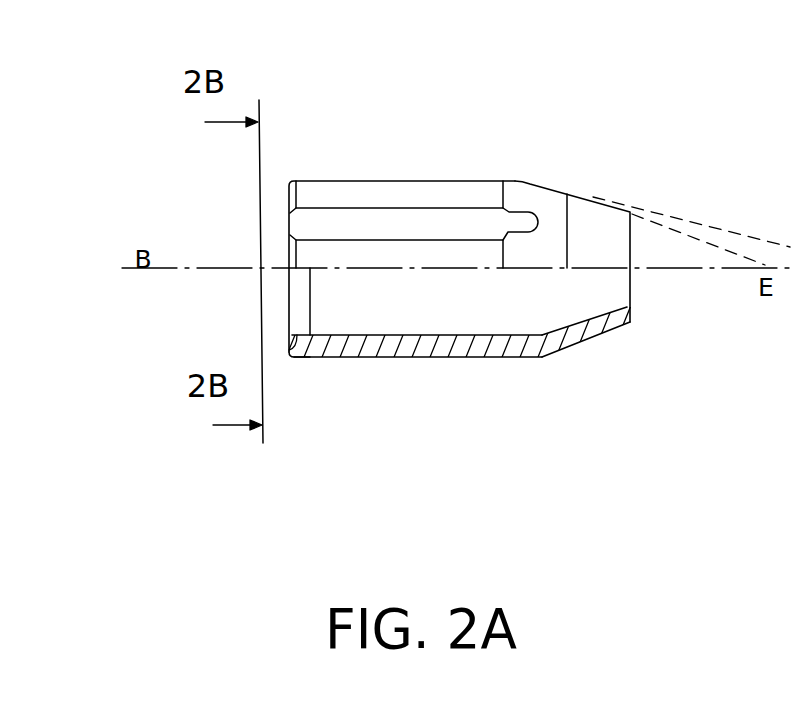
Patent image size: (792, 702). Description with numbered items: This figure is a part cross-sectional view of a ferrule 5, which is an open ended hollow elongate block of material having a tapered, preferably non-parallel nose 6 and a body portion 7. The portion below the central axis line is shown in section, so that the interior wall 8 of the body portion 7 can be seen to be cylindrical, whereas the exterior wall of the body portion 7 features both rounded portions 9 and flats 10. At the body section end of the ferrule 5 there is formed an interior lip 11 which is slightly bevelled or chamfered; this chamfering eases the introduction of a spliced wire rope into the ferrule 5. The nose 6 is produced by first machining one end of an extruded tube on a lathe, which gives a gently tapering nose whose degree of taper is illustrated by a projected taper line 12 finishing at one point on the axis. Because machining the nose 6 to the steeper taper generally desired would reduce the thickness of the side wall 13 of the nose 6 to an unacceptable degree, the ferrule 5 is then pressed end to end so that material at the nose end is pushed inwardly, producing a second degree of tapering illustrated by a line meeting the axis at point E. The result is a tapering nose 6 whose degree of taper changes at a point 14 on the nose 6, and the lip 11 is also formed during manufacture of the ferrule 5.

The ferrule 5 is at (362, 172).
The nose 6 is at (543, 180).
The body portion 7 is at (406, 180).
The interior wall 8 is at (422, 318).
The rounded portions 9 is at (442, 192).
The flats 10 is at (473, 220).
The interior lip 11 is at (300, 340).
The projected line 12 is at (507, 260).
The side wall 13 is at (568, 338).
The point 14 is at (590, 201).